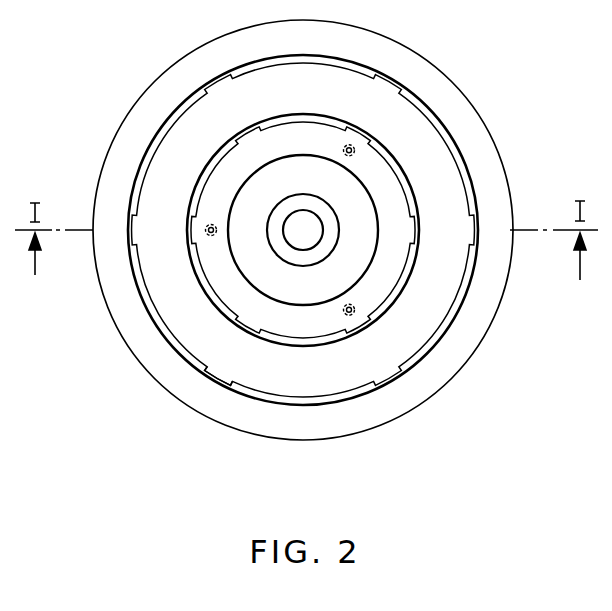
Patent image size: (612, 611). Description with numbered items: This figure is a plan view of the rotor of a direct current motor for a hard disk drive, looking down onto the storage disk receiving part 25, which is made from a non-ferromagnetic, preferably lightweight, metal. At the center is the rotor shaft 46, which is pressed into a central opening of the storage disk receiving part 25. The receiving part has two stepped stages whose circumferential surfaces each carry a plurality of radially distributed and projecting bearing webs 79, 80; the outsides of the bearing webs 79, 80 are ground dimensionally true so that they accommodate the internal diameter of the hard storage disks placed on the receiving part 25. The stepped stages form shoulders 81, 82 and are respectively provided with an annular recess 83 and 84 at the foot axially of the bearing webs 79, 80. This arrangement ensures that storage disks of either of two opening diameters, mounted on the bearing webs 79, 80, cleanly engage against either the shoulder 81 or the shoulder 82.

The shoulder 81 is at (457, 99).
The annular recess 83 is at (181, 103).
The shoulder 82 is at (447, 177).
The bearing web 79 is at (218, 386).
The annular recess 84 is at (203, 170).
The bearing web 80 is at (236, 320).
The storage disk receiving part 25 is at (212, 256).
The rotor shaft 46 is at (311, 239).